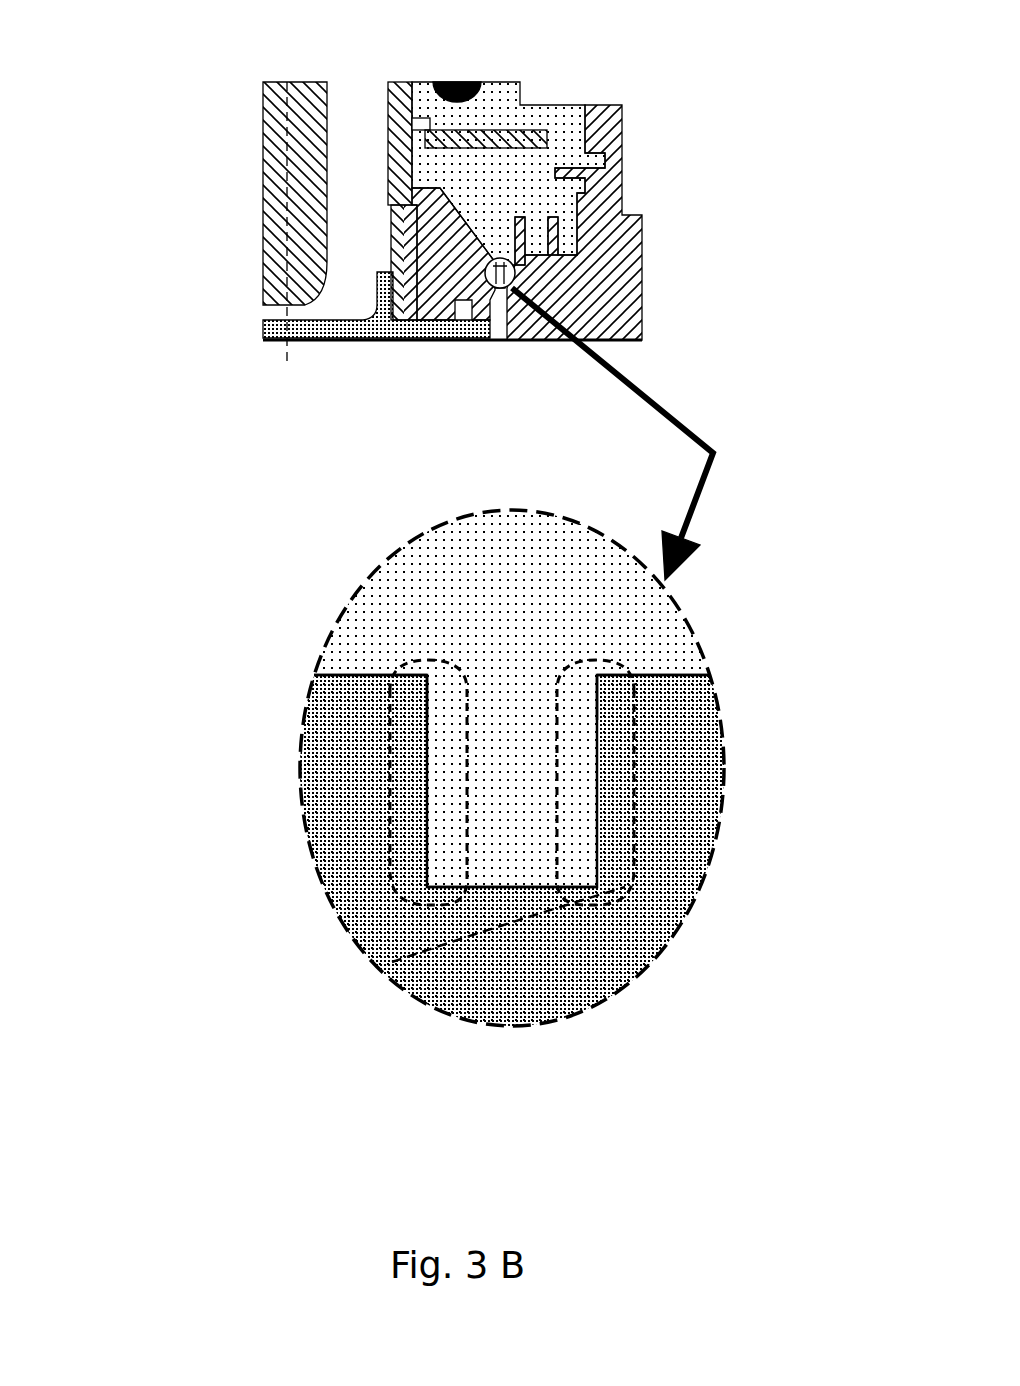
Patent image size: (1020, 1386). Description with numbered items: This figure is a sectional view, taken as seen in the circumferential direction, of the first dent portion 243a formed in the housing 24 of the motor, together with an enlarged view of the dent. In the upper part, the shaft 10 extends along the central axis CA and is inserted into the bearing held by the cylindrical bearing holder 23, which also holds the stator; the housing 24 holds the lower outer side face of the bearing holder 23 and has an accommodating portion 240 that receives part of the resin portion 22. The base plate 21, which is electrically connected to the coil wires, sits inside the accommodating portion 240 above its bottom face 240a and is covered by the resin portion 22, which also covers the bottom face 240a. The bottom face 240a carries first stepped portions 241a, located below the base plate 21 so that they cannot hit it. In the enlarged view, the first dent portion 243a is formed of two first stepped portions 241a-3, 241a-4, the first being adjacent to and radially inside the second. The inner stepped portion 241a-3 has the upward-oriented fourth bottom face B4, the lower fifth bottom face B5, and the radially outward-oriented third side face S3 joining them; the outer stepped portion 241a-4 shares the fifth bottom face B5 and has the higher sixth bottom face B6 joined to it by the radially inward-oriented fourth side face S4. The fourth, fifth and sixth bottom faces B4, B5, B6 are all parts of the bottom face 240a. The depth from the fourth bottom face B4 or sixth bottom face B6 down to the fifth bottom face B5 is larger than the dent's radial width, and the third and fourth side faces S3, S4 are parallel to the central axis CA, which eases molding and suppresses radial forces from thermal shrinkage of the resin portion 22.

The shaft 10 is at (275, 101).
The base plate 21 is at (430, 130).
The resin portion 22 is at (335, 657).
The bearing holder 23 is at (392, 262).
The housing 24 is at (447, 282).
The accommodating portion 240 is at (584, 232).
The bottom face 240a is at (490, 251).
The first stepped portions 241a is at (503, 205).
The first stepped portion 241a-3 is at (373, 876).
The first stepped portion 241a-4 is at (388, 962).
The first dent portion 243a is at (520, 685).
The fourth bottom face B4 is at (367, 670).
The fifth bottom face B5 is at (433, 706).
The sixth bottom face B6 is at (655, 662).
The third side face S3 is at (513, 884).
The fourth side face S4 is at (594, 698).
The central axis CA is at (287, 356).